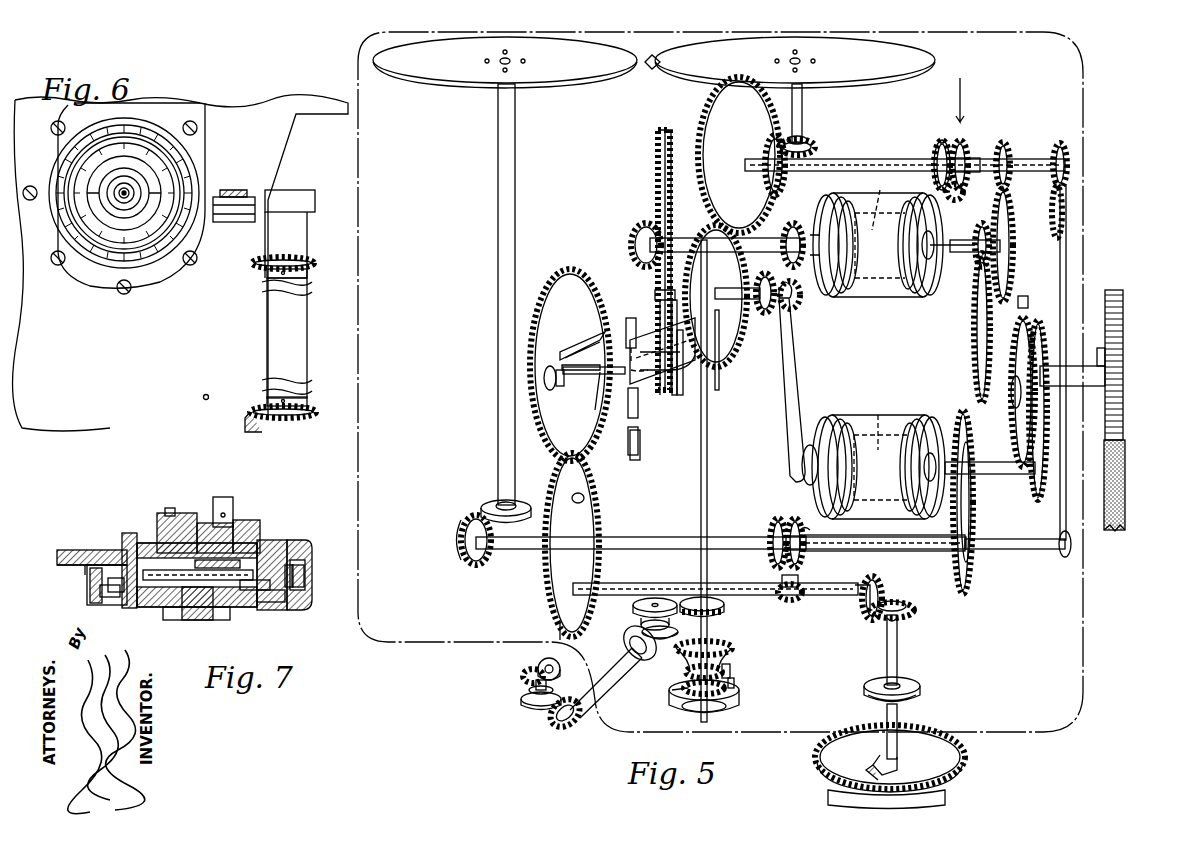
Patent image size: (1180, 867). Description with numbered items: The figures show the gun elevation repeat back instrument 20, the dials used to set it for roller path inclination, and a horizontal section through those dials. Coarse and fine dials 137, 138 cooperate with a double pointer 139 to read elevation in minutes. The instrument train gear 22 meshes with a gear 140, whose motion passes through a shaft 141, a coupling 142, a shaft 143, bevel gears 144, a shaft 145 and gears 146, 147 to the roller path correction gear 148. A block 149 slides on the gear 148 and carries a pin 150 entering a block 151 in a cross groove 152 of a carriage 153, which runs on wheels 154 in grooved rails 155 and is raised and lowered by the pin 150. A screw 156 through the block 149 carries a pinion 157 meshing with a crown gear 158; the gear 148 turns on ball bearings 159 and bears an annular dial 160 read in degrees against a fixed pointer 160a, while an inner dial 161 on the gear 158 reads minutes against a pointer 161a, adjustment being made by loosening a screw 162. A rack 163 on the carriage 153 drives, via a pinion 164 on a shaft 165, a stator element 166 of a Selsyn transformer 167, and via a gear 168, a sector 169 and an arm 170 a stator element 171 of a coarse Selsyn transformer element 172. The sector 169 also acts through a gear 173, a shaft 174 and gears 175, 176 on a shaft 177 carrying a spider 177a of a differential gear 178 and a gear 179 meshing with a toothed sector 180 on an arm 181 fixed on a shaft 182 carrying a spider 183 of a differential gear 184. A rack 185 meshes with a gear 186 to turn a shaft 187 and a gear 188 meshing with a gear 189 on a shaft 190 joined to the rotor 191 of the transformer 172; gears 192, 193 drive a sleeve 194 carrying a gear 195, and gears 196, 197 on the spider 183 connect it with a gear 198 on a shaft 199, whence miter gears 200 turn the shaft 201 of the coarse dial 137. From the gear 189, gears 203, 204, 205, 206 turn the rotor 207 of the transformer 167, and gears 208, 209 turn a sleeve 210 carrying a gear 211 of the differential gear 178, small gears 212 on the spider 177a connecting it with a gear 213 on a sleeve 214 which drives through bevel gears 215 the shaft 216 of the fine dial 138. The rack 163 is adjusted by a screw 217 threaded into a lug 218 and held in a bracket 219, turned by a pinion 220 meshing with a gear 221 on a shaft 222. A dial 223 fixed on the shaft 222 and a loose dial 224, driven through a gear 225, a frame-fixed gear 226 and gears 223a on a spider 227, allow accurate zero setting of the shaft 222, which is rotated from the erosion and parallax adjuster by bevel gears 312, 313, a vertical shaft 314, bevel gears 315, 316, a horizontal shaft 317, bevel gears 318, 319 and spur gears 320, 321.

In FIG. 5, the gun elevation repeat back instrument 20 is at (1093, 639).
In FIG. 5, the instrument train gear 22 is at (930, 790).
In FIG. 5, the coarse dial 137 is at (530, 72).
In FIG. 5, the fine dial 138 is at (905, 55).
In FIG. 5, the double pointer 139 is at (658, 66).
In FIG. 5, the gear 140 is at (917, 745).
In FIG. 5, the shaft 141 is at (900, 720).
In FIG. 5, the coupling 142 is at (915, 683).
In FIG. 5, the shaft 143 is at (897, 654).
In FIG. 5, the bevel or miter gears 144 is at (880, 580).
In FIG. 5, the shaft 145 is at (828, 592).
In FIG. 5, the gear 146 is at (565, 573).
In FIG. 5, the gear 147 is at (580, 490).
In FIG. 7, the roller path correction gear 148 is at (85, 596).
In FIG. 5, the roller path correction gear 148 is at (555, 280).
In FIG. 7, the block or carriage 149 is at (240, 562).
In FIG. 5, the block or carriage 149 is at (572, 374).
In FIG. 7, the pin 150 is at (228, 565).
In FIG. 5, the pin 150 is at (595, 378).
In FIG. 7, the block 151 is at (240, 540).
In FIG. 5, the block 151 is at (647, 338).
In FIG. 7, the cross groove 152 is at (140, 535).
In FIG. 5, the cross groove 152 is at (632, 450).
In FIG. 7, the carriage 153 is at (160, 545).
In FIG. 5, the carriage 153 is at (645, 372).
In FIG. 7, the wheels 154 is at (272, 545).
In FIG. 7, the grooved rails 155 is at (290, 545).
In FIG. 5, the grooved rails 155 is at (637, 455).
In FIG. 7, the screw 156 is at (237, 580).
In FIG. 5, the screw 156 is at (540, 340).
In FIG. 7, the pinion 157 is at (110, 600).
In FIG. 5, the pinion 157 is at (548, 390).
In FIG. 6, the crown gear 158 is at (124, 200).
In FIG. 7, the crown gear 158 is at (135, 603).
In FIG. 7, the ball bearings 159 is at (305, 603).
In FIG. 6, the annular scale or dial 160 is at (160, 235).
In FIG. 7, the annular scale or dial 160 is at (260, 605).
In FIG. 6, the fixed pointer 160a is at (192, 196).
In FIG. 6, the scale or dial 161 is at (172, 160).
In FIG. 7, the scale or dial 161 is at (245, 608).
In FIG. 6, the pointer 161a is at (145, 130).
In FIG. 7, the screw 162 is at (195, 620).
In FIG. 7, the rack 163 is at (185, 515).
In FIG. 5, the rack 163 is at (656, 152).
In FIG. 7, the pinion 164 is at (205, 523).
In FIG. 5, the pinion 164 is at (650, 238).
In FIG. 7, the shaft 165 is at (228, 500).
In FIG. 5, the shaft 165 is at (760, 240).
In FIG. 5, the stator element 166 is at (873, 290).
In FIG. 5, the Selsyn transformer 167 is at (900, 302).
In FIG. 5, the gear 168 is at (828, 297).
In FIG. 5, the sector 169 is at (796, 308).
In FIG. 5, the arm 170 is at (798, 352).
In FIG. 5, the stator element 171 is at (858, 430).
In FIG. 5, the coarse Selsyn transformer element 172 is at (912, 412).
In FIG. 5, the gear 173 is at (745, 300).
In FIG. 5, the shaft 174 is at (762, 313).
In FIG. 5, the gear 175 is at (700, 230).
In FIG. 5, the gear 176 is at (750, 195).
In FIG. 5, the shaft 177 is at (760, 145).
In FIG. 5, the spider 177a is at (948, 148).
In FIG. 5, the differential gear 178 is at (960, 78).
In FIG. 5, the gear 179 is at (1068, 160).
In FIG. 5, the toothed sector 180 is at (1065, 200).
In FIG. 5, the arm 181 is at (1066, 270).
In FIG. 5, the shaft 182 is at (1040, 549).
In FIG. 5, the spider 183 is at (778, 520).
In FIG. 5, the differential gear 184 is at (797, 500).
In FIG. 5, the rack 185 is at (1120, 525).
In FIG. 5, the gear 186 is at (1123, 297).
In FIG. 5, the shaft 187 is at (1085, 376).
In FIG. 5, the gear 188 is at (1025, 310).
In FIG. 5, the gear 189 is at (1036, 500).
In FIG. 5, the shaft 190 is at (1000, 470).
In FIG. 5, the rotor 191 is at (878, 405).
In FIG. 5, the gear 192 is at (966, 430).
In FIG. 5, the gear 193 is at (970, 570).
In FIG. 5, the sleeve 194 is at (870, 545).
In FIG. 5, the gear 195 is at (803, 532).
In FIG. 5, the gear 196 is at (790, 587).
In FIG. 5, the gear 197 is at (778, 578).
In FIG. 5, the gear 198 is at (775, 520).
In FIG. 5, the shaft 199 is at (675, 540).
In FIG. 5, the miter or bevel gears 200 is at (462, 525).
In FIG. 5, the shaft 201 is at (498, 198).
In FIG. 5, the gear 203 is at (1012, 380).
In FIG. 5, the gear 204 is at (1015, 350).
In FIG. 5, the gear 205 is at (975, 320).
In FIG. 5, the gear 206 is at (980, 262).
In FIG. 5, the rotor 207 is at (895, 202).
In FIG. 5, the gear 208 is at (1010, 262).
In FIG. 5, the gear 209 is at (1010, 150).
In FIG. 5, the sleeve 210 is at (970, 160).
In FIG. 5, the gear 211 is at (965, 148).
In FIG. 5, the small gears 212 is at (955, 195).
In FIG. 5, the gear 213 is at (938, 145).
In FIG. 5, the sleeve 214 is at (860, 160).
In FIG. 5, the bevel or miter gears 215 is at (813, 138).
In FIG. 5, the shaft 216 is at (802, 102).
In FIG. 5, the screw 217 is at (672, 310).
In FIG. 5, the lug 218 is at (658, 292).
In FIG. 5, the bracket 219 is at (668, 392).
In FIG. 5, the pinion 220 is at (677, 345).
In FIG. 5, the gear 221 is at (719, 395).
In FIG. 5, the shaft 222 is at (707, 422).
In FIG. 5, the dial 223 is at (730, 710).
In FIG. 5, the gears 223a is at (768, 683).
In FIG. 5, the dial 224 is at (716, 690).
In FIG. 5, the gear 225 is at (672, 692).
In FIG. 5, the gear 226 is at (720, 672).
In FIG. 5, the spider 227 is at (722, 650).
In FIG. 5, the bevel gear 312 is at (538, 665).
In FIG. 5, the bevel gear 313 is at (523, 678).
In FIG. 5, the vertical shaft 314 is at (530, 690).
In FIG. 5, the bevel gear 315 is at (525, 702).
In FIG. 5, the bevel gear 316 is at (550, 720).
In FIG. 5, the horizontal shaft 317 is at (605, 680).
In FIG. 5, the bevel gear 318 is at (625, 640).
In FIG. 5, the bevel gear 319 is at (645, 628).
In FIG. 5, the spur gear 320 is at (655, 603).
In FIG. 5, the spur gear 321 is at (720, 610).